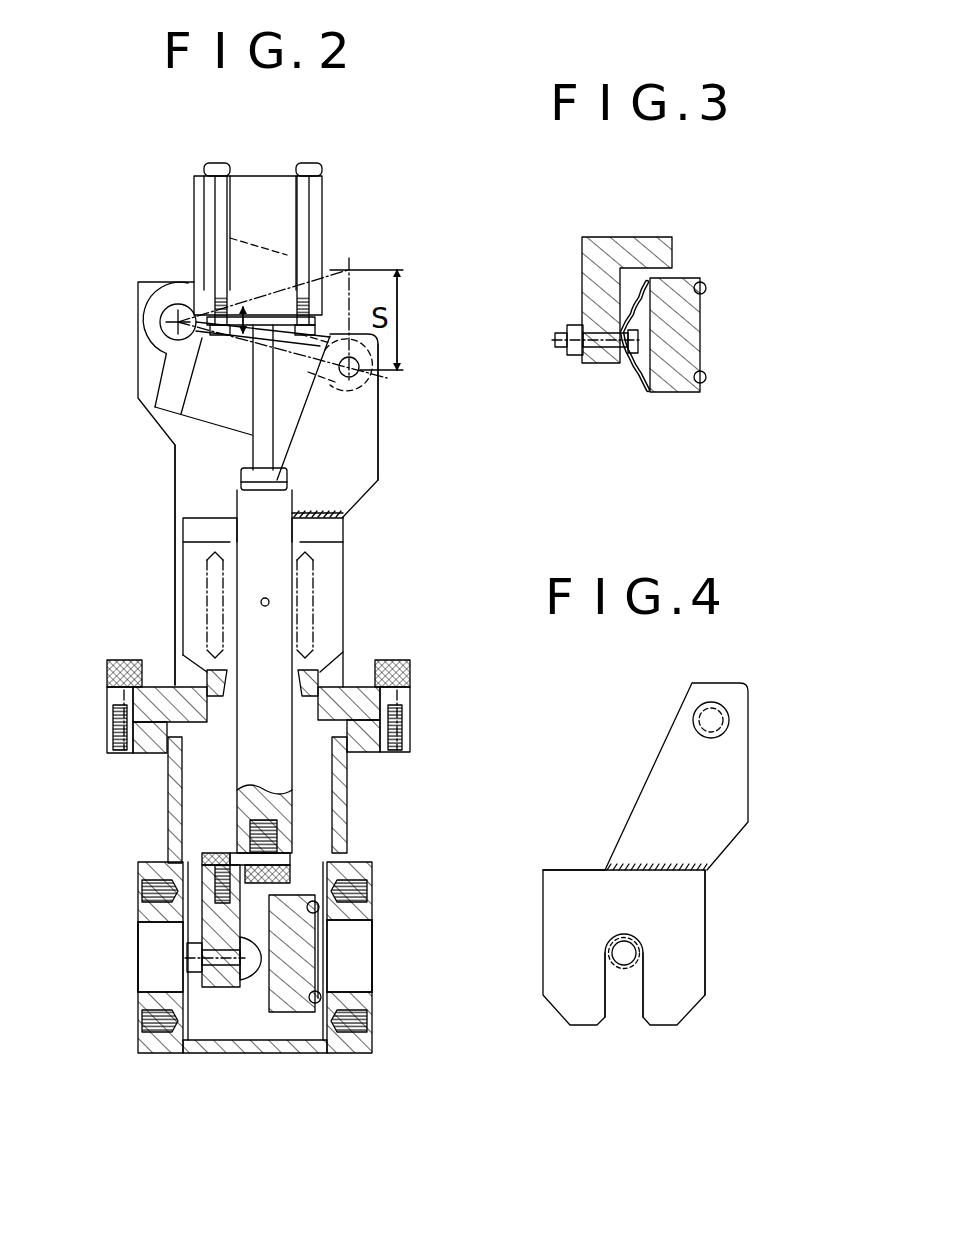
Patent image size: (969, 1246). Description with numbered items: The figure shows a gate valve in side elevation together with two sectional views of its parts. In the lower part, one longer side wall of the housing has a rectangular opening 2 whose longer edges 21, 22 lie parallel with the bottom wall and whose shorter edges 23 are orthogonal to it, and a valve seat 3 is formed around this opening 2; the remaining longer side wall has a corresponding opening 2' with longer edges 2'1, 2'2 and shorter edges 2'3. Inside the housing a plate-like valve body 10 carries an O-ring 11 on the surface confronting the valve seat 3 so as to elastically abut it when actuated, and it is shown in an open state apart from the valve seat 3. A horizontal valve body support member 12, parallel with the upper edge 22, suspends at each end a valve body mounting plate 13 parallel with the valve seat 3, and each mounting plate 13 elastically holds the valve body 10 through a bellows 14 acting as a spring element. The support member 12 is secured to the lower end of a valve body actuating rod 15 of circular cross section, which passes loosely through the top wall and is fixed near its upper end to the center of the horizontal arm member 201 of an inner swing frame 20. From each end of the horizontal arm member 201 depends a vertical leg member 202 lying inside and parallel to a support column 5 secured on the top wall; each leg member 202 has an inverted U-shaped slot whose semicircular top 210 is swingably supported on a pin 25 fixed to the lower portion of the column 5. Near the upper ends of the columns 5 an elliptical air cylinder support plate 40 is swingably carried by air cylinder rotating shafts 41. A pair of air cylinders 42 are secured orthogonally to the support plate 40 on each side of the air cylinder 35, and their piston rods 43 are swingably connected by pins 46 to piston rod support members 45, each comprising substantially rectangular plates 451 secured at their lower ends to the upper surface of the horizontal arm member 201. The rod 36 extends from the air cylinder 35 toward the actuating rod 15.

In FIG. 2, the air cylinder 35 is at (275, 200).
In FIG. 2, the air cylinder rotating shaft 41 is at (147, 333).
In FIG. 2, the air cylinder support plate 40 is at (170, 388).
In FIG. 2, the air cylinder 42 is at (218, 403).
In FIG. 2, the piston rod 43 is at (293, 367).
In FIG. 2, the actuator rod 36 is at (273, 448).
In FIG. 2, the pin 46 is at (360, 380).
In FIG. 4, the pin 46 is at (730, 712).
In FIG. 2, the piston rod support member 45 is at (385, 472).
In FIG. 4, the piston rod support member 45 is at (720, 805).
In FIG. 2, the rectangular plate 451 is at (360, 440).
In FIG. 2, the support column 5 is at (187, 492).
In FIG. 2, the valve body actuating rod 15 is at (275, 790).
In FIG. 2, the valve body 10 is at (363, 687).
In FIG. 3, the valve body 10 is at (683, 380).
In FIG. 2, the O-ring 11 is at (345, 815).
In FIG. 3, the O-ring 11 is at (705, 378).
In FIG. 2, the valve body support member 12 is at (292, 855).
In FIG. 3, the valve body support member 12 is at (645, 243).
In FIG. 2, the valve body mounting plate 13 is at (190, 958).
In FIG. 3, the valve body mounting plate 13 is at (592, 365).
In FIG. 2, the bellows 14 is at (257, 983).
In FIG. 3, the bellows 14 is at (637, 385).
In FIG. 2, the valve seat 3 is at (323, 1023).
In FIG. 2, the opening 2 is at (349, 956).
In FIG. 2, the longer edge of opening 21 is at (350, 982).
In FIG. 4, the longer edge of opening 21 is at (637, 1003).
In FIG. 2, the longer edge of opening 22 is at (350, 923).
In FIG. 2, the shorter edge of opening 23 is at (362, 967).
In FIG. 2, the opening 2' is at (160, 957).
In FIG. 2, the longer edge of opening 2'1 is at (132, 1013).
In FIG. 2, the longer edge of opening 2'2 is at (133, 916).
In FIG. 2, the shorter edge of opening 2'3 is at (86, 964).
In FIG. 4, the inner swing frame 20 is at (588, 840).
In FIG. 4, the horizontal arm member 201 is at (563, 870).
In FIG. 4, the vertical leg member 202 is at (690, 968).
In FIG. 4, the semicircular top of slot 210 is at (640, 943).
In FIG. 4, the pin 25 is at (623, 972).